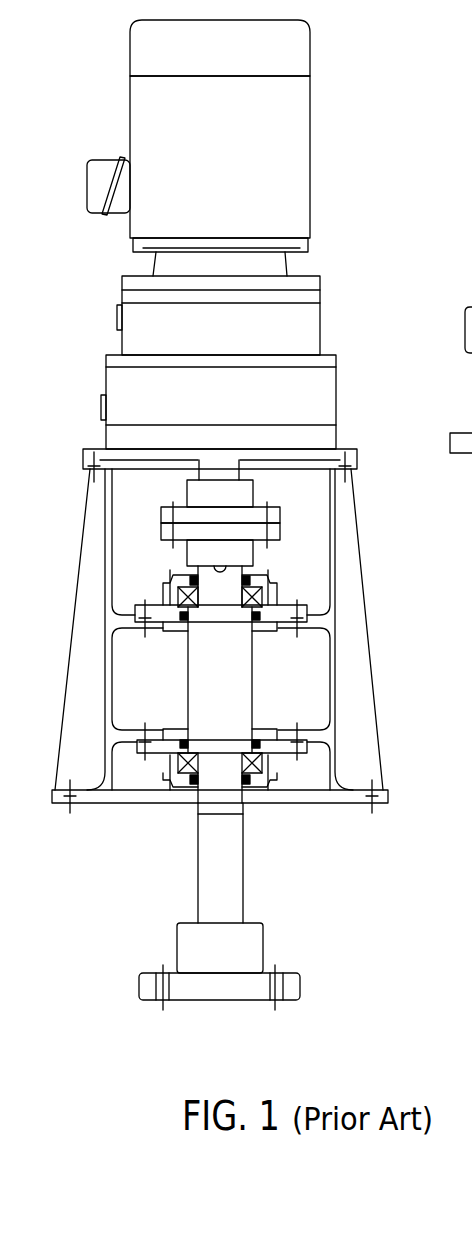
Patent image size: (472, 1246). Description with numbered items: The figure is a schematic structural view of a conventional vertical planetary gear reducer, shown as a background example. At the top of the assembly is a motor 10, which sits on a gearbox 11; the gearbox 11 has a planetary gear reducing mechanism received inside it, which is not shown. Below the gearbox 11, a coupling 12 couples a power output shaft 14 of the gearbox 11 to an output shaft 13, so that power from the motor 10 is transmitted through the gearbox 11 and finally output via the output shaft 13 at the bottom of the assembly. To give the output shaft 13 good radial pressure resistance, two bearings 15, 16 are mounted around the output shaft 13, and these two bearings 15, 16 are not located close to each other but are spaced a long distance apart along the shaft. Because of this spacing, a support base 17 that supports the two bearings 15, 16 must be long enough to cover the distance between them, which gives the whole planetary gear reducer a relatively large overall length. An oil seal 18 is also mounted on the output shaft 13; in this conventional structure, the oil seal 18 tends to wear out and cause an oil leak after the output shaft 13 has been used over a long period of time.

The motor 10 is at (293, 143).
The gearbox 11 is at (322, 397).
The coupling 12 is at (288, 525).
The output shaft 13 is at (232, 873).
The power output shaft 14 is at (229, 473).
The bearing 15 is at (255, 598).
The bearing 16 is at (258, 787).
The support base 17 is at (355, 651).
The oil seal 18 is at (180, 786).